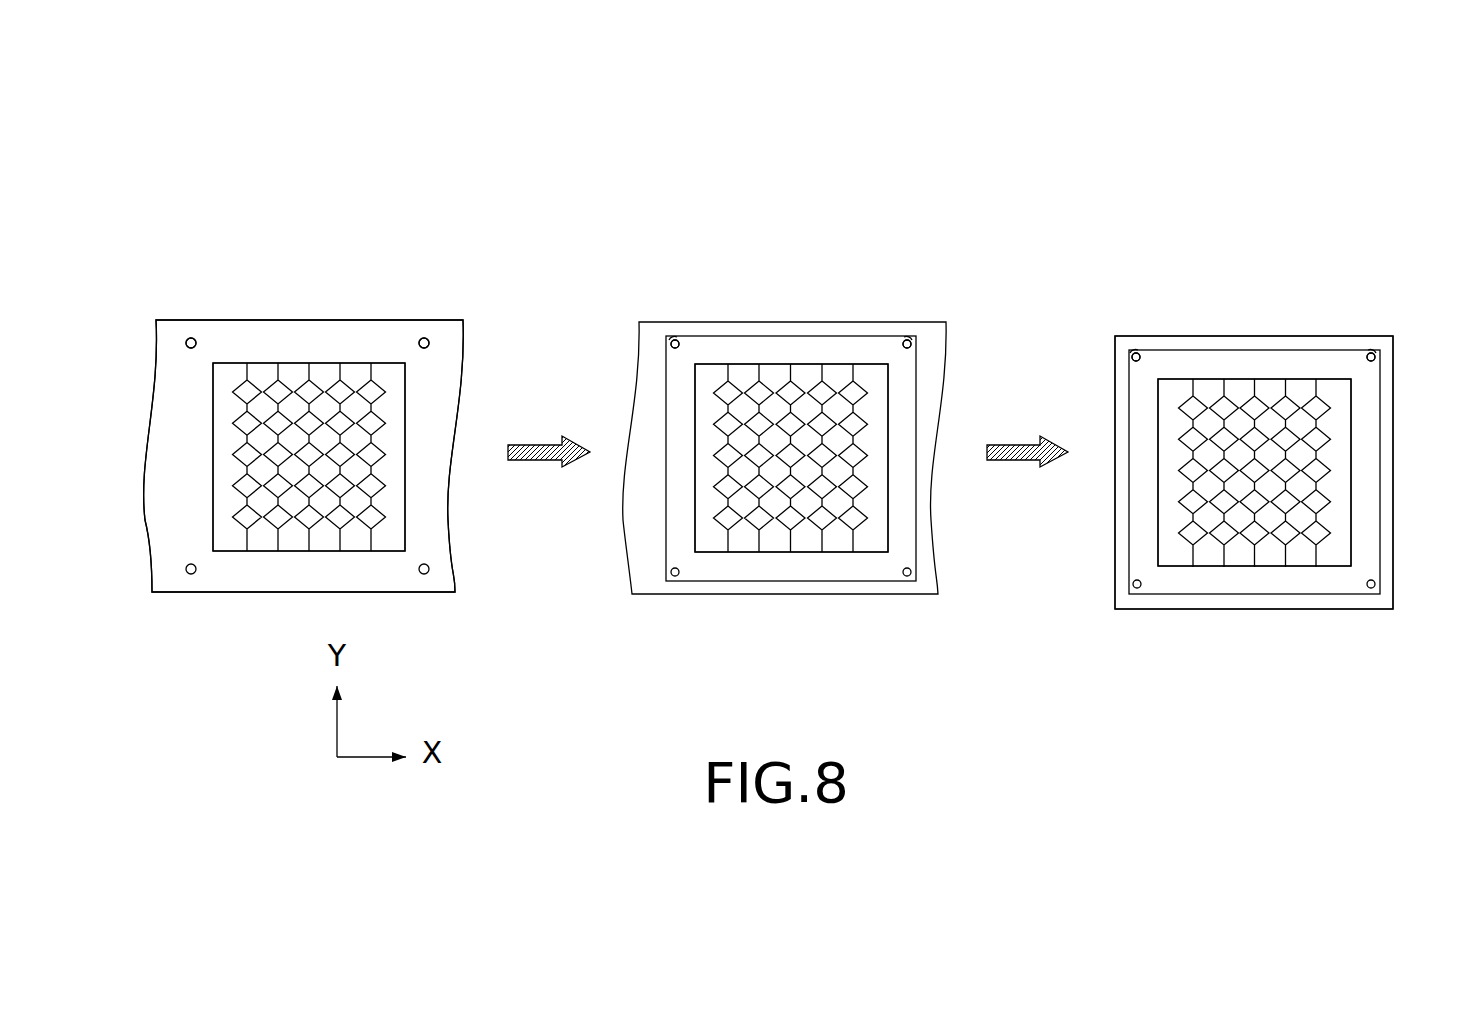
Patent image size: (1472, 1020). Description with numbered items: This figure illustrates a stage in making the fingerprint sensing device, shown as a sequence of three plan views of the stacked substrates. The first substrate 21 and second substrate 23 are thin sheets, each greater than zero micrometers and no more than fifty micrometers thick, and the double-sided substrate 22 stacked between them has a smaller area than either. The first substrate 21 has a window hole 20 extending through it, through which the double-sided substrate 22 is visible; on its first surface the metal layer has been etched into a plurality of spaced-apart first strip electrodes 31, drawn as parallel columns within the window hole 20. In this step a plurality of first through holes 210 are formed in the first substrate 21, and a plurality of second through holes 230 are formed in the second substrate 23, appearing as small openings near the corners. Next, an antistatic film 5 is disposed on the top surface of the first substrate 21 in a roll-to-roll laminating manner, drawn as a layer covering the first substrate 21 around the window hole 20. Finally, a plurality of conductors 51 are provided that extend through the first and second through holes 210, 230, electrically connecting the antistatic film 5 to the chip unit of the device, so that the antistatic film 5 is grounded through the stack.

The window hole 20 is at (409, 413).
The first substrate 21 is at (297, 320).
The second substrate 23 is at (768, 423).
The double-sided substrate 22 is at (222, 422).
The first strip electrodes 31 is at (278, 554).
The first through holes 210 is at (192, 337).
The second through holes 230 is at (801, 298).
The antistatic film 5 is at (783, 347).
The conductors 51 is at (1128, 352).